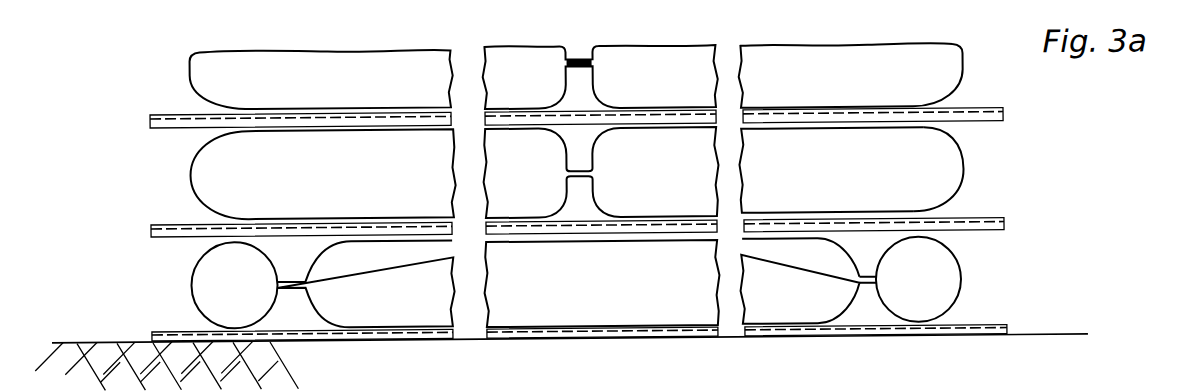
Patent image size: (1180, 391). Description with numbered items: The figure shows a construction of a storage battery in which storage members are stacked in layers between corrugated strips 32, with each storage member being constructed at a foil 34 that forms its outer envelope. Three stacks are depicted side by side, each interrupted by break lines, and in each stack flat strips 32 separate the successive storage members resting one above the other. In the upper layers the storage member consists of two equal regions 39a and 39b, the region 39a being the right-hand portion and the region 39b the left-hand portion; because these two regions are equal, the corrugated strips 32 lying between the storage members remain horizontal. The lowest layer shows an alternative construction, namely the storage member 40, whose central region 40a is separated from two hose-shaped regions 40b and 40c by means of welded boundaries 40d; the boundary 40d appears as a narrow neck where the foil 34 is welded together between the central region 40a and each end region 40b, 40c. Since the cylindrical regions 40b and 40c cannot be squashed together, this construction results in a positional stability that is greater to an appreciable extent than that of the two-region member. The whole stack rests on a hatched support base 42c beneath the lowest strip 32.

The corrugated strips 32 is at (1004, 124).
The foil 34 is at (965, 172).
The first equal region of storage member 39a is at (898, 169).
The second equal region of storage member 39b is at (245, 169).
The storage member 40 is at (899, 303).
The central region 40a is at (588, 289).
The hose-shaped region 40b is at (933, 279).
The hose-shaped region 40c is at (232, 276).
The welded boundaries 40d is at (865, 293).
The support base 42c is at (561, 362).